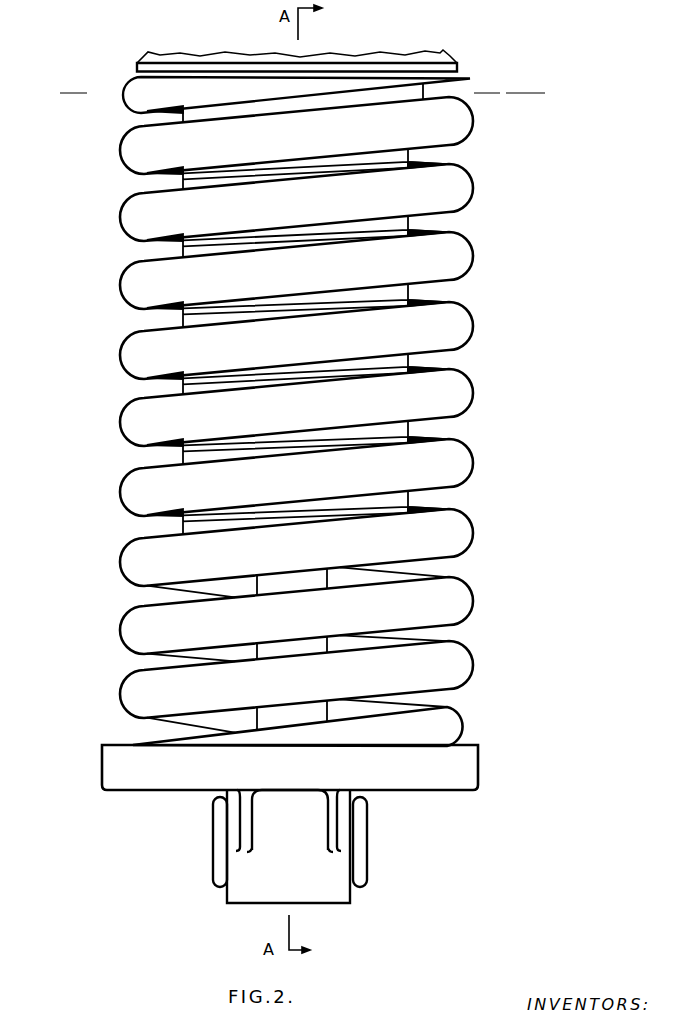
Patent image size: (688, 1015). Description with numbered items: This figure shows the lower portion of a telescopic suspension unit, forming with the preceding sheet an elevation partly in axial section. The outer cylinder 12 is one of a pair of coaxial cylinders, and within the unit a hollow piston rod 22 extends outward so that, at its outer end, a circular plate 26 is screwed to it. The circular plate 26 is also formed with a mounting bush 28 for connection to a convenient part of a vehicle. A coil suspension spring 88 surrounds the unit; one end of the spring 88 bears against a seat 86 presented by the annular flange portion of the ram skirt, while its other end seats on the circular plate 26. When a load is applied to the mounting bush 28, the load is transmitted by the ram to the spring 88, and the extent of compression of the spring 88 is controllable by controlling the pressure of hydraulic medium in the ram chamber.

The outer cylinder 12 is at (271, 415).
The hollow piston rod 22 is at (308, 648).
The circular plate 26 is at (437, 783).
The mounting bush 28 is at (333, 885).
The seat 86 is at (140, 77).
The coil suspension spring 88 is at (118, 354).